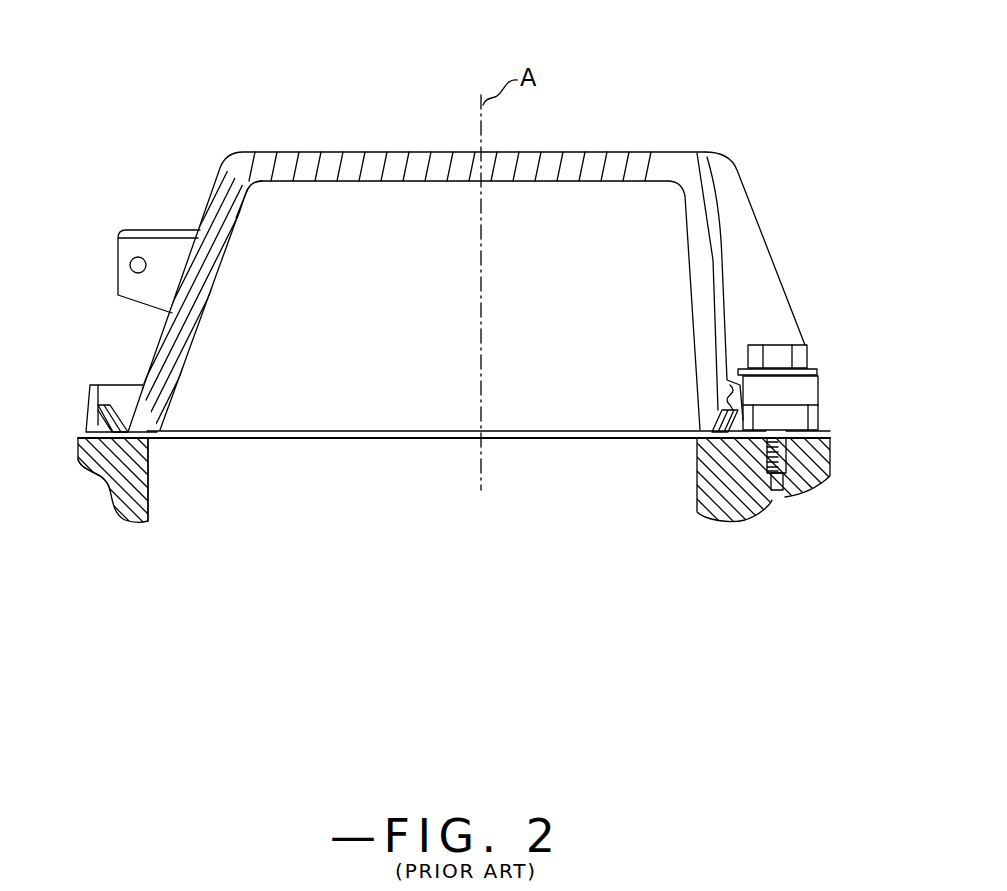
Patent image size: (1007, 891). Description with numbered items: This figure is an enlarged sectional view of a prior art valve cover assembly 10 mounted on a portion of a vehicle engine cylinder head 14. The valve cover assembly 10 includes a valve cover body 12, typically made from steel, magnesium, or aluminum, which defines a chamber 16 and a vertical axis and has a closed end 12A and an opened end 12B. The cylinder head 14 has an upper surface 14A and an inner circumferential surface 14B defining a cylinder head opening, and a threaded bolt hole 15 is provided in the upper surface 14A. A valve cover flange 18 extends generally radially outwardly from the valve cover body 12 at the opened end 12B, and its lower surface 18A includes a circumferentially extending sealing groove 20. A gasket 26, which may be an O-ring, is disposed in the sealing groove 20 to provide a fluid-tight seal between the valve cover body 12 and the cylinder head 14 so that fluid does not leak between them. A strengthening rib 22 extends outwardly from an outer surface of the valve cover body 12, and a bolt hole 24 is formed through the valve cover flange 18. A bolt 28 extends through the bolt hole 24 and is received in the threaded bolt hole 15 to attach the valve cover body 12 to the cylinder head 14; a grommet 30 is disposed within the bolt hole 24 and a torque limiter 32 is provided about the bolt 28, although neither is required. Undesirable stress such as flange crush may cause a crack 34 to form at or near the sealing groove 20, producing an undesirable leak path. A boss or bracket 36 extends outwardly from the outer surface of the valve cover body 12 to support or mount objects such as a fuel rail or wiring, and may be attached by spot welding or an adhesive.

The valve cover assembly 10 is at (302, 55).
The valve cover body 12 is at (389, 262).
The closed end 12A is at (412, 167).
The opened end 12B is at (400, 412).
The cylinder head 14 is at (158, 501).
The upper surface 14A is at (148, 428).
The inner circumferential surface 14B is at (150, 452).
The threaded bolt hole 15 is at (790, 472).
The chamber 16 is at (293, 200).
The valve cover flange 18 is at (100, 383).
The lower surface 18A is at (122, 483).
The sealing groove 20 is at (118, 408).
The strengthening rib 22 is at (747, 243).
The bolt hole 24 is at (797, 390).
The gasket 26 is at (120, 405).
The bolt 28 is at (773, 355).
The grommet 30 is at (772, 398).
The torque limiter 32 is at (812, 369).
The crack 34 is at (723, 393).
The bracket 36 is at (118, 252).